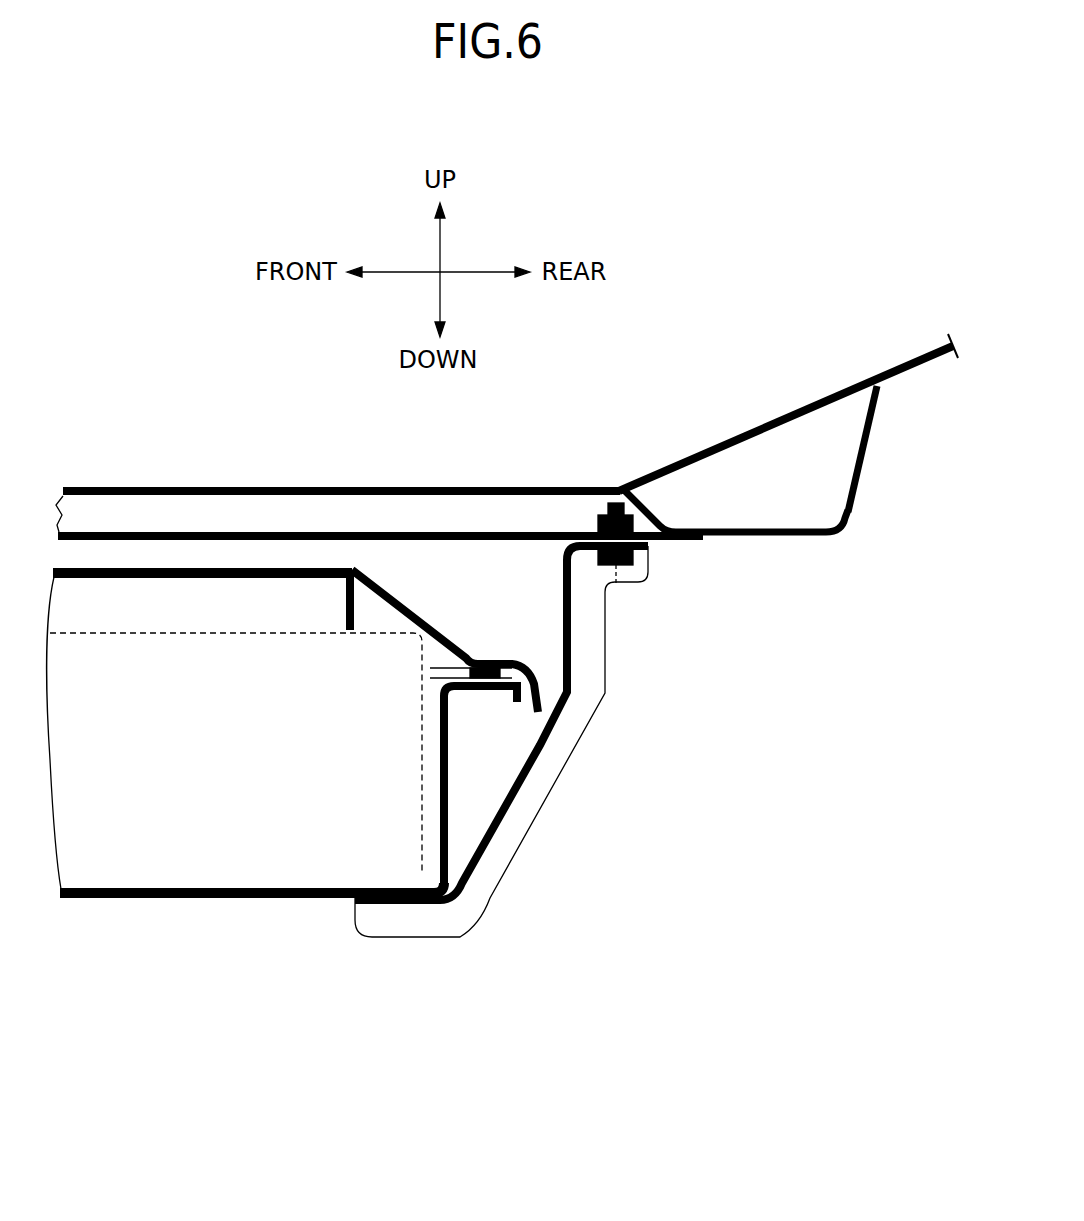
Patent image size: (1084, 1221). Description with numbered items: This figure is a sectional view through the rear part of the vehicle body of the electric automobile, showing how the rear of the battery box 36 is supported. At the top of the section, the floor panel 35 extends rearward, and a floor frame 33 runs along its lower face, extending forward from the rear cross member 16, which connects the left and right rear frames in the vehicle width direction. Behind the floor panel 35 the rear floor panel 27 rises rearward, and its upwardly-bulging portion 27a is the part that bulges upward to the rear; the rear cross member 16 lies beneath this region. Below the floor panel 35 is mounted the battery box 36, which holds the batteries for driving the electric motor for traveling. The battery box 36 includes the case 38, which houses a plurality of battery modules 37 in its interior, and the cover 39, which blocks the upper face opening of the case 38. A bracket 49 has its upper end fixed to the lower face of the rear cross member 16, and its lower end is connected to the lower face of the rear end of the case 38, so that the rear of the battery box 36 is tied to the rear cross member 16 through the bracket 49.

The rear cross member 16 is at (773, 537).
The rear floor panel 27 is at (770, 416).
The upwardly-bulging portion 27a is at (845, 390).
The floor frame 33 is at (460, 532).
The floor panel 35 is at (356, 486).
The battery box 36 is at (155, 904).
The battery module 37 is at (197, 631).
The case 38 is at (286, 900).
The cover 39 is at (182, 568).
The bracket 49 is at (538, 775).